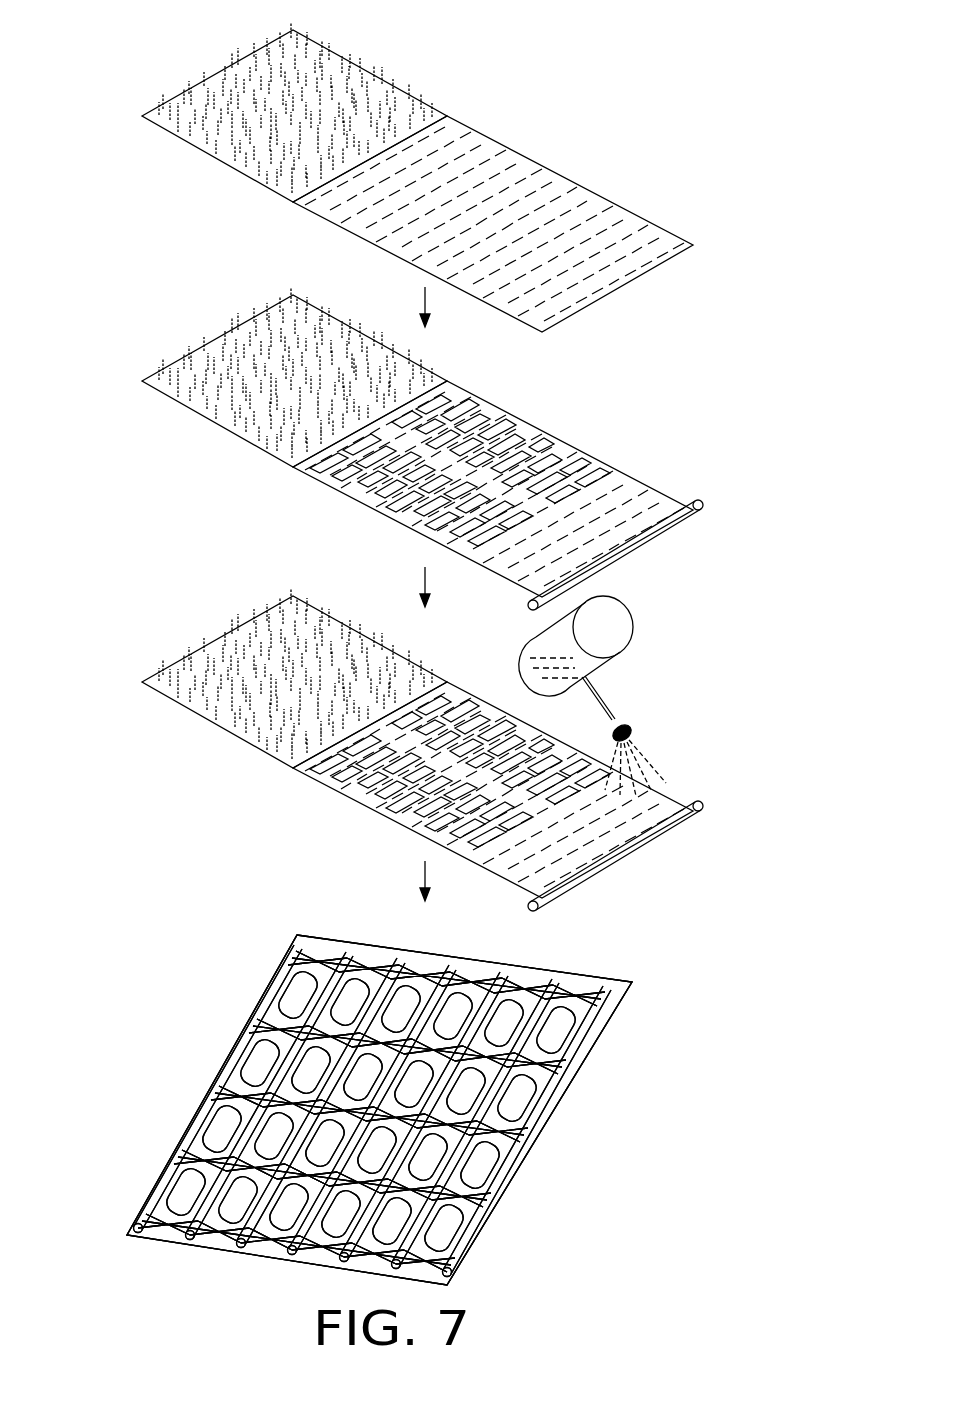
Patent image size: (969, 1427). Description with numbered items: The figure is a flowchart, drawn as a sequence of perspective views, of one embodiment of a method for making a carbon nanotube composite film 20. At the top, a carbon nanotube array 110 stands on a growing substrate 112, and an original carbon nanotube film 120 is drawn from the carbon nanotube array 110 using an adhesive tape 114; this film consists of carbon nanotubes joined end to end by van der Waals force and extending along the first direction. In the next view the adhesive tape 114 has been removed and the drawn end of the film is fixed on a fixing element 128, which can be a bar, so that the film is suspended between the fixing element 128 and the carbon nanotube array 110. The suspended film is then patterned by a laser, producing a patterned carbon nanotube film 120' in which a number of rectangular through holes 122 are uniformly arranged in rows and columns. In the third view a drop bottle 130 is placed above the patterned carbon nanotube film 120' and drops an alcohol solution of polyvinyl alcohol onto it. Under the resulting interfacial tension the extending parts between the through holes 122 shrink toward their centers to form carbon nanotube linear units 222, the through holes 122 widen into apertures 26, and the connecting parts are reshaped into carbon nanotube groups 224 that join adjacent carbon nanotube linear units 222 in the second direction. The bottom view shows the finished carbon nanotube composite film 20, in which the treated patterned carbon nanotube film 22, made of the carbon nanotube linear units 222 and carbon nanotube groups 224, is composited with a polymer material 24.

The carbon nanotube array 110 is at (372, 76).
The growing substrate 112 is at (150, 120).
The adhesive tape 114 is at (673, 268).
The original carbon nanotube film 120 is at (499, 507).
The patterned carbon nanotube film 120' is at (465, 466).
The through holes 122 is at (565, 470).
The fixing element 128 is at (703, 508).
The drop bottle 130 is at (631, 610).
The carbon nanotube composite film 20 is at (548, 959).
The treated patterned carbon nanotube film 22 is at (130, 1042).
The polymer material 24 is at (262, 998).
The apertures 26 is at (258, 1062).
The carbon nanotube linear units 222 is at (205, 1114).
The carbon nanotube groups 224 is at (245, 1082).